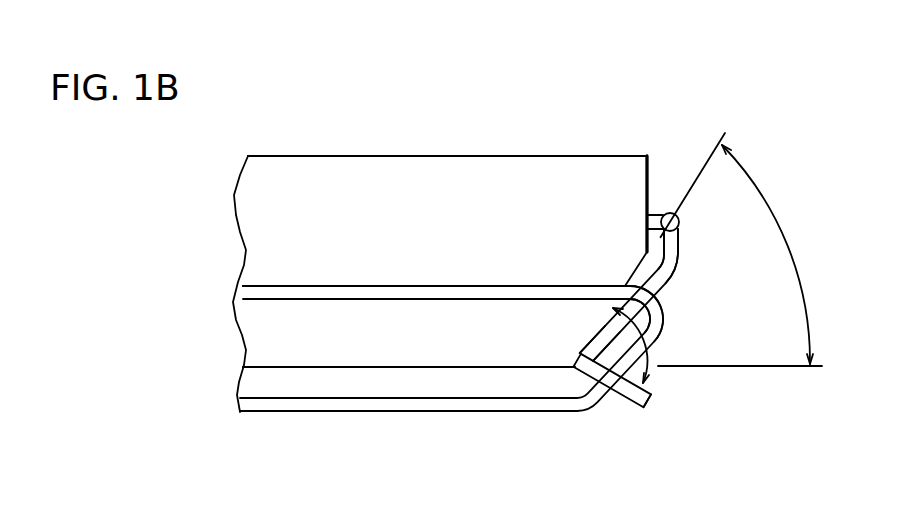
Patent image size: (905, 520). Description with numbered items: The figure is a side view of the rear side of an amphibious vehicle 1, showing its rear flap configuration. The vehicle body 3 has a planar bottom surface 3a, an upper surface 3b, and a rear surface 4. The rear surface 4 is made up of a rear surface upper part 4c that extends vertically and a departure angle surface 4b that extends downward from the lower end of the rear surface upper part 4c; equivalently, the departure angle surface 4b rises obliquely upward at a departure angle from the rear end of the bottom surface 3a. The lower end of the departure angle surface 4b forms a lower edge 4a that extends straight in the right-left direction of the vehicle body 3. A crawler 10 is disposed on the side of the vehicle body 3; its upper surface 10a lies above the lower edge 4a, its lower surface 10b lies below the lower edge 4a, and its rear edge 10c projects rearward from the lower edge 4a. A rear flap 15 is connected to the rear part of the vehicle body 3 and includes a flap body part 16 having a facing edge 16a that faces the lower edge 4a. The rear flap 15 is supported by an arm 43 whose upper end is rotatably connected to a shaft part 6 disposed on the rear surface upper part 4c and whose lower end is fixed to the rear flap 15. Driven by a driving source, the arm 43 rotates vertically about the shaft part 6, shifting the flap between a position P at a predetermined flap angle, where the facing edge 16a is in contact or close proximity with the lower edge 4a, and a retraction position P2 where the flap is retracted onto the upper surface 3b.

The amphibious vehicle 1 is at (640, 116).
The vehicle body 3 is at (365, 170).
The bottom surface 3a is at (342, 368).
The upper surface 3b is at (467, 157).
The rear surface 4 is at (653, 151).
The lower edge 4a is at (577, 378).
The departure angle surface 4b is at (641, 265).
The rear surface upper part 4c is at (648, 182).
The arm 43 is at (679, 248).
The shaft part 6 is at (679, 222).
The crawler 10 is at (437, 422).
The upper surface 10a is at (428, 285).
The lower surface 10b is at (490, 412).
The rear edge 10c is at (663, 332).
The rear flap 15 is at (630, 415).
The flap body part 16 is at (651, 407).
The facing edge 16a is at (574, 361).
The position P is at (742, 383).
The retraction position P2 is at (566, 103).